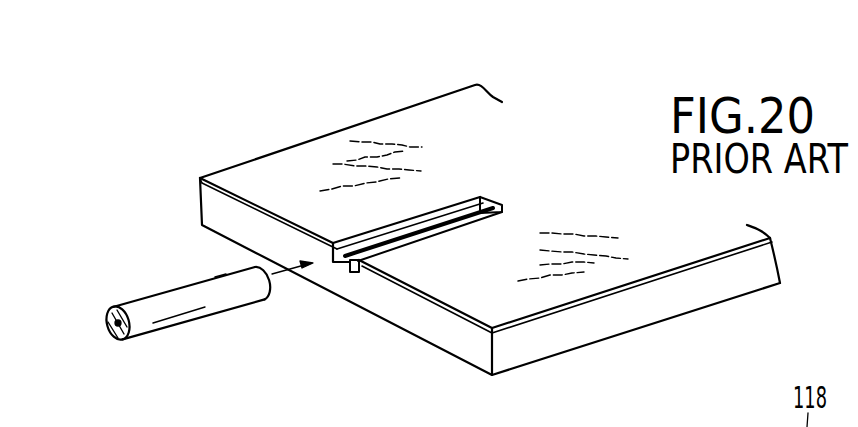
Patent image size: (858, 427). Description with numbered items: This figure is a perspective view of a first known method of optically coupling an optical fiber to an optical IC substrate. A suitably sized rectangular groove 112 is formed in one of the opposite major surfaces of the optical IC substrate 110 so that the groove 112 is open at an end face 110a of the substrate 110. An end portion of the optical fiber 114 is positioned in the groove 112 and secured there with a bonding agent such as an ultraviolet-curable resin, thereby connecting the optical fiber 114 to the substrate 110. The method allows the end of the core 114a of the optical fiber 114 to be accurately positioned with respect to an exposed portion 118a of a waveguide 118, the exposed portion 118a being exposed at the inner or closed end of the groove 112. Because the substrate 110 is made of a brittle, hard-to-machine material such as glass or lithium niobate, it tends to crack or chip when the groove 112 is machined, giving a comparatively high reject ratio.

The optical IC substrate 110 is at (580, 348).
The end face of the substrate 110a is at (412, 315).
The rectangular groove 112 is at (347, 272).
The optical fiber 114 is at (182, 287).
The core of the optical fiber 114a is at (113, 338).
The waveguide 118 is at (401, 117).
The exposed portion of the waveguide 118a is at (492, 197).